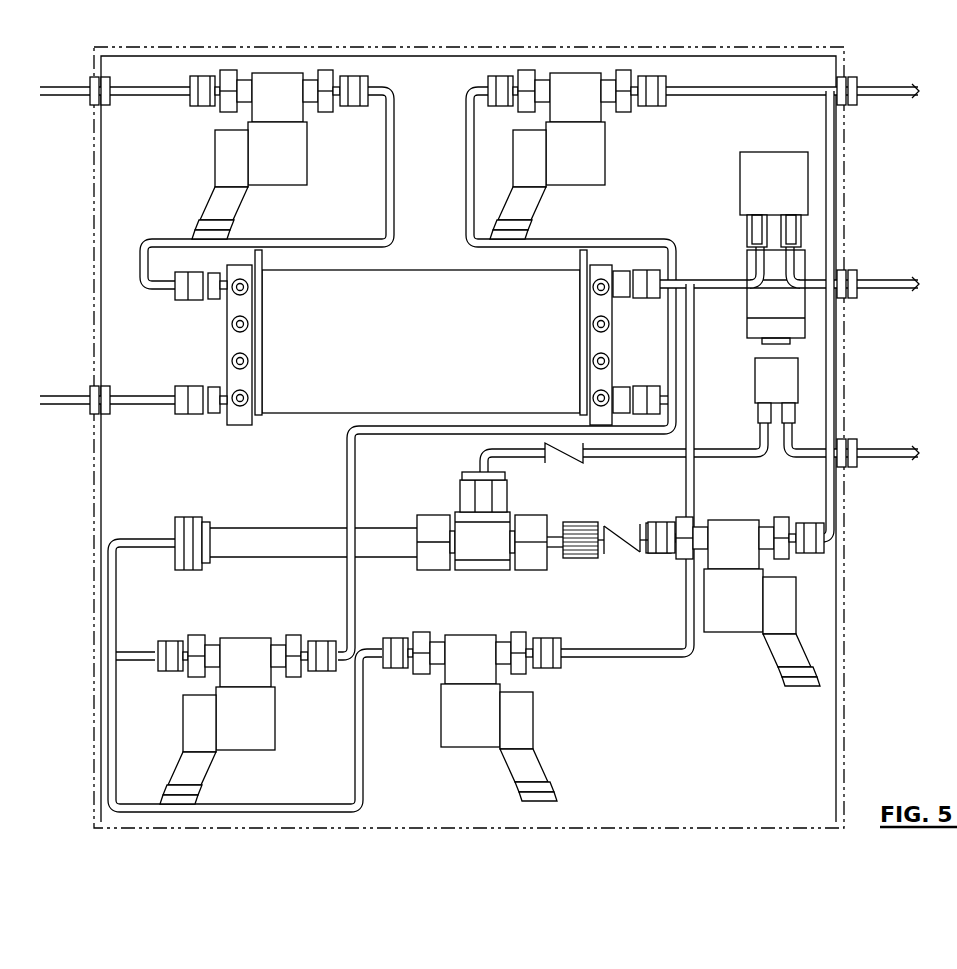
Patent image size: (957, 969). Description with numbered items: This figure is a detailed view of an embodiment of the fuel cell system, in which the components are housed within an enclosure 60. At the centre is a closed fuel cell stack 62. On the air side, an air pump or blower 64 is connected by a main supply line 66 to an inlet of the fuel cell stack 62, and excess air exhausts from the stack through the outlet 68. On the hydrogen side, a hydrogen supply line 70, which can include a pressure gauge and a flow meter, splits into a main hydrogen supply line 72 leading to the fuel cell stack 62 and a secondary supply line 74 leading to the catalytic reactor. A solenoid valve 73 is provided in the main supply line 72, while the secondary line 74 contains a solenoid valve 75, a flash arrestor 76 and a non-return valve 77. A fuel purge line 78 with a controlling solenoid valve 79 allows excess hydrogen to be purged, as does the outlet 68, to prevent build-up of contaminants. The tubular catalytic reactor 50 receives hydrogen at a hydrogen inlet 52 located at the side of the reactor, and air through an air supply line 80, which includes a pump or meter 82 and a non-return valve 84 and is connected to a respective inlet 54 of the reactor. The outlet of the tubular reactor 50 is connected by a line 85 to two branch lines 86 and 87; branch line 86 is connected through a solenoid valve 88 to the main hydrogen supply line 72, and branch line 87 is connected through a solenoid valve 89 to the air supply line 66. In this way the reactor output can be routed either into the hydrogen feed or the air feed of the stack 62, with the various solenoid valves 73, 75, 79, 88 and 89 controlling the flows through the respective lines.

The tubular catalytic reactor 50 is at (252, 528).
The hydrogen inlet 52 is at (562, 560).
The inlet 54 is at (478, 453).
The enclosure 60 is at (683, 50).
The fuel cell stack 62 is at (430, 268).
The air pump or blower 64 is at (757, 152).
The main supply line 66 is at (688, 279).
The air exhaust outlet 68 is at (142, 393).
The hydrogen supply line 70 is at (880, 86).
The main hydrogen supply line 72 is at (673, 403).
The solenoid valve 73 is at (575, 72).
The secondary supply line 74 is at (645, 522).
The solenoid valve 75 is at (743, 518).
The flash arrestor 76 is at (583, 560).
The non-return valve 77 is at (637, 553).
The fuel purge line 78 is at (125, 95).
The solenoid valve 79 is at (278, 72).
The air supply line 80 is at (700, 452).
The pump or meter 82 is at (803, 373).
The non-return valve 84 is at (560, 457).
The line 85 is at (130, 537).
The branch line 86 is at (110, 594).
The branch line 87 is at (107, 728).
The solenoid valve 88 is at (262, 716).
The solenoid valve 89 is at (520, 712).